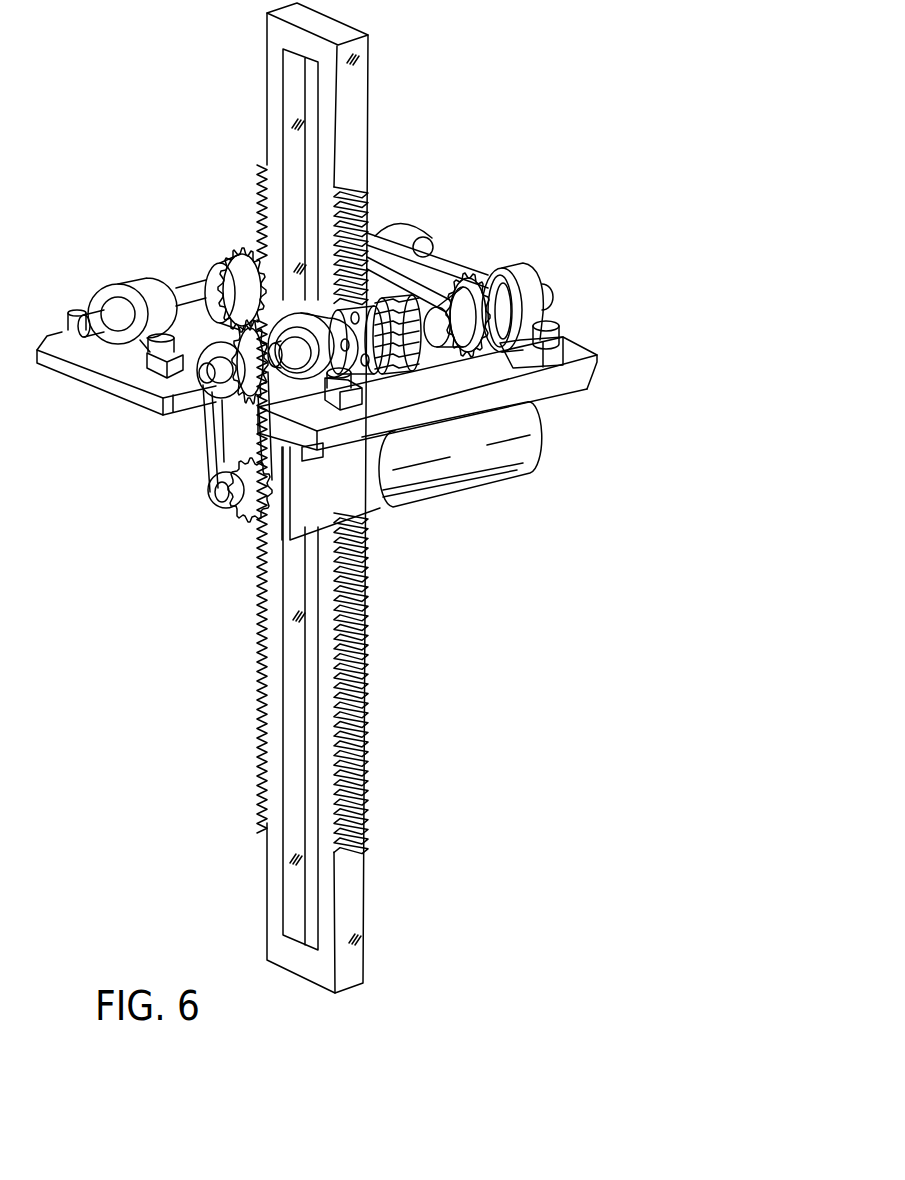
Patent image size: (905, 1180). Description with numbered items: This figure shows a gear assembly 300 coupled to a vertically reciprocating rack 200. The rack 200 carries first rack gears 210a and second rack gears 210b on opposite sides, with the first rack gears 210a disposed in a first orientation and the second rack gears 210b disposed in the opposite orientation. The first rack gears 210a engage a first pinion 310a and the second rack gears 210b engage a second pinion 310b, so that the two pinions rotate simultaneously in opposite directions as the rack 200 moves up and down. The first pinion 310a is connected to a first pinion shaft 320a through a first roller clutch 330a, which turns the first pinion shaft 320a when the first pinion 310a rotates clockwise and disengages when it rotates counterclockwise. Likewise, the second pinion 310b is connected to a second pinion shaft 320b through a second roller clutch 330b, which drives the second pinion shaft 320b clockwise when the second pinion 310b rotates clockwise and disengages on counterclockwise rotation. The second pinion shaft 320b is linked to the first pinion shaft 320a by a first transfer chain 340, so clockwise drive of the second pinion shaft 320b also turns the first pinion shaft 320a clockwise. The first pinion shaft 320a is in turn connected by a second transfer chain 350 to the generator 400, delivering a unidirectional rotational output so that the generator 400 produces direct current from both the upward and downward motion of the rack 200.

The rack 200 is at (282, 30).
The first rack gears 210a is at (367, 193).
The second rack gears 210b is at (258, 190).
The gear assembly 300 is at (100, 380).
The first pinion 310a is at (485, 400).
The first roller clutch 330a is at (407, 357).
The second pinion 310b is at (170, 258).
The second roller clutch 330b is at (252, 250).
The first pinion shaft 320a is at (280, 360).
The second pinion shaft 320b is at (190, 300).
The first transfer chain 340 is at (440, 262).
The second transfer chain 350 is at (215, 445).
The generator 400 is at (460, 440).